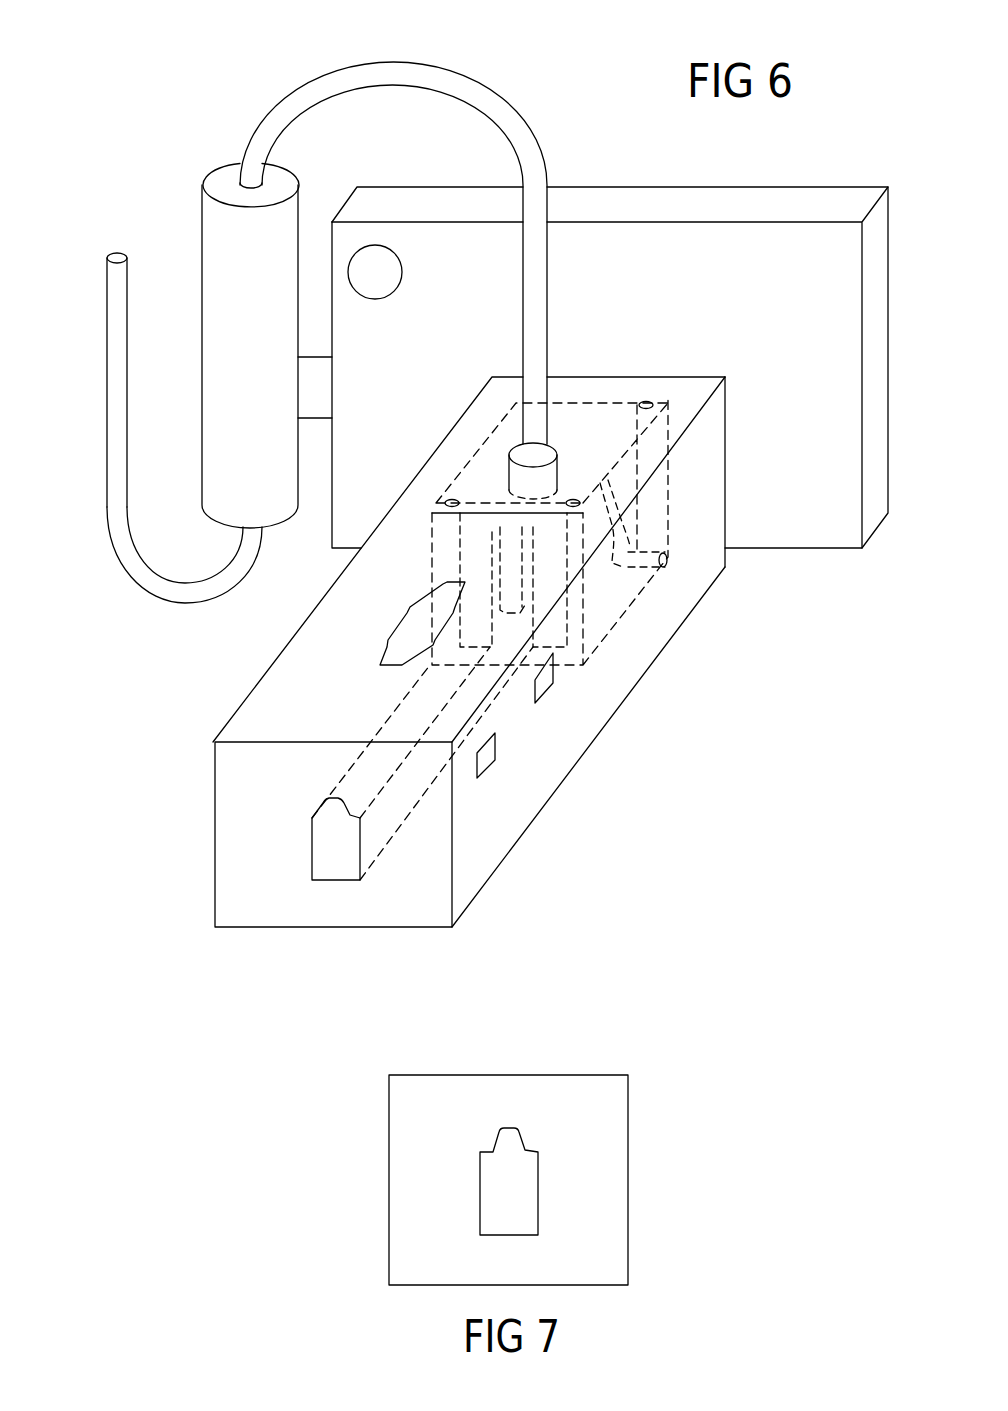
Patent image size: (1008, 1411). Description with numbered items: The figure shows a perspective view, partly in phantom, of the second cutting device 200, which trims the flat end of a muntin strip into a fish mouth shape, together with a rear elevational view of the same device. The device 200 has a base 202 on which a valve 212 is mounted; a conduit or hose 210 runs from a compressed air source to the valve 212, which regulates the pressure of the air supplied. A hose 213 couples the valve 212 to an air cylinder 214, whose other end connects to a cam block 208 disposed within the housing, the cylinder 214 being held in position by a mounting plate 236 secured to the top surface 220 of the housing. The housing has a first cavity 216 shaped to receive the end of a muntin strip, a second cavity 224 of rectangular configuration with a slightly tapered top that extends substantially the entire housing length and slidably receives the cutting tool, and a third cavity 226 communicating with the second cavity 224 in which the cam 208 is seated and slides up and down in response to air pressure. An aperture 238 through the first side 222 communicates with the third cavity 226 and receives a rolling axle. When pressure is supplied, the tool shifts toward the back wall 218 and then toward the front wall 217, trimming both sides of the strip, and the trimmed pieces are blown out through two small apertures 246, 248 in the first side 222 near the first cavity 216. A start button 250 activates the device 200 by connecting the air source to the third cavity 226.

In FIG. 6, the second cutting device 200 is at (304, 70).
In FIG. 6, the base 202 is at (732, 246).
In FIG. 6, the cam block 208 is at (633, 457).
In FIG. 6, the conduit or hose 210 is at (107, 328).
In FIG. 6, the valve 212 is at (215, 227).
In FIG. 6, the hose 213 is at (522, 123).
In FIG. 6, the air cylinder 214 is at (560, 442).
In FIG. 6, the first cavity 216 is at (420, 616).
In FIG. 6, the front wall 217 is at (415, 898).
In FIG. 6, the back wall 218 is at (725, 485).
In FIG. 7, the back wall 218 is at (598, 1097).
In FIG. 6, the top surface 220 is at (278, 686).
In FIG. 6, the first side 222 is at (567, 735).
In FIG. 6, the second cavity 224 is at (330, 842).
In FIG. 7, the second cavity 224 is at (486, 1186).
In FIG. 6, the third cavity 226 is at (607, 577).
In FIG. 6, the mounting plate 236 is at (492, 467).
In FIG. 6, the aperture 238 is at (667, 561).
In FIG. 6, the aperture 246 is at (548, 680).
In FIG. 6, the aperture 248 is at (495, 757).
In FIG. 6, the start button 250 is at (380, 260).